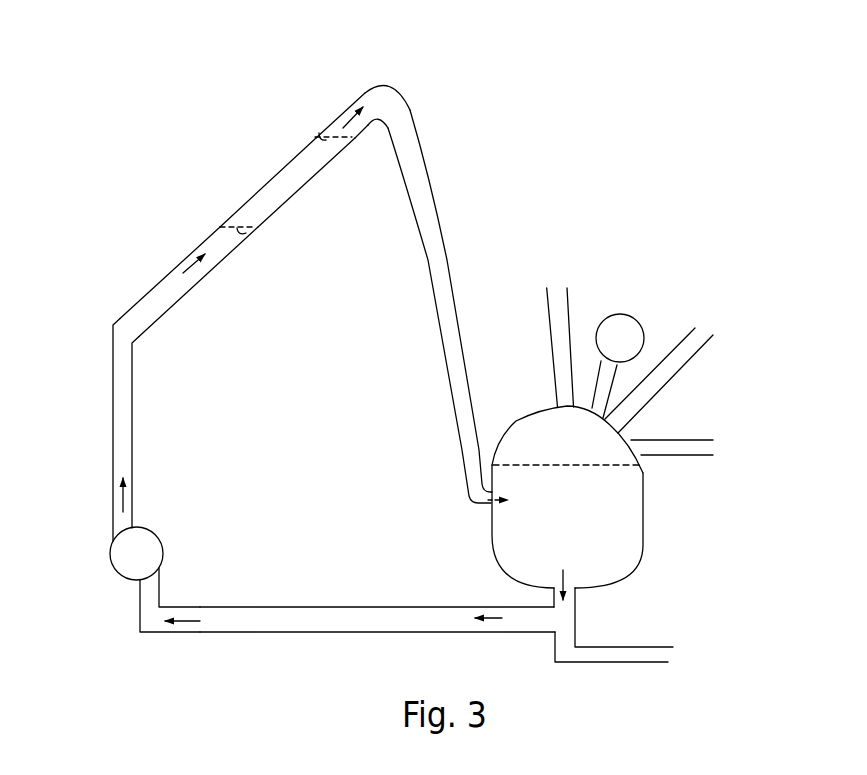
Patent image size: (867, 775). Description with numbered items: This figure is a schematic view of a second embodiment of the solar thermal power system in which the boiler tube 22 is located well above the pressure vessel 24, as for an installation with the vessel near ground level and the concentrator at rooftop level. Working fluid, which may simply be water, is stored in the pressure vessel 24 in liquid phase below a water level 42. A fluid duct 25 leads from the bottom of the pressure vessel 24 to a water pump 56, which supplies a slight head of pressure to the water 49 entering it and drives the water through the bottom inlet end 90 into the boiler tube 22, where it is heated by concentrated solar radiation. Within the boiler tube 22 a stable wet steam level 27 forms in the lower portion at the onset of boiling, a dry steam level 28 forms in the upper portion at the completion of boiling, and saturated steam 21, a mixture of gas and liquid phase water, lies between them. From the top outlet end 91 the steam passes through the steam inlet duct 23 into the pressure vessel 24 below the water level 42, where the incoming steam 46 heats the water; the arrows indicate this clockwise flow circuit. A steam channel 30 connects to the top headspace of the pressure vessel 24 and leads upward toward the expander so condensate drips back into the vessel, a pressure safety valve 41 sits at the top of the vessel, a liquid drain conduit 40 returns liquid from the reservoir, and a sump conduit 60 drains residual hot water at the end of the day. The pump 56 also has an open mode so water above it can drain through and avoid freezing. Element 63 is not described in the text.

The saturated steam 21 is at (300, 163).
The boiler tube 22 is at (245, 200).
The steam inlet duct 23 is at (472, 502).
The pressure vessel 24 is at (613, 535).
The fluid duct 25 is at (302, 632).
The wet steam level 27 is at (243, 233).
The dry steam level 28 is at (322, 133).
The steam channel 30 is at (553, 332).
The liquid drain conduit 40 is at (702, 350).
The pressure safety valve 41 is at (598, 317).
The water level 42 is at (558, 466).
The incoming steam 46 is at (505, 507).
The water 49 is at (185, 630).
The pump 56 is at (148, 547).
The sump conduit 60 is at (627, 650).
The overflow pipe 63 is at (660, 443).
The inlet end 90 is at (122, 317).
The outlet end 91 is at (393, 80).